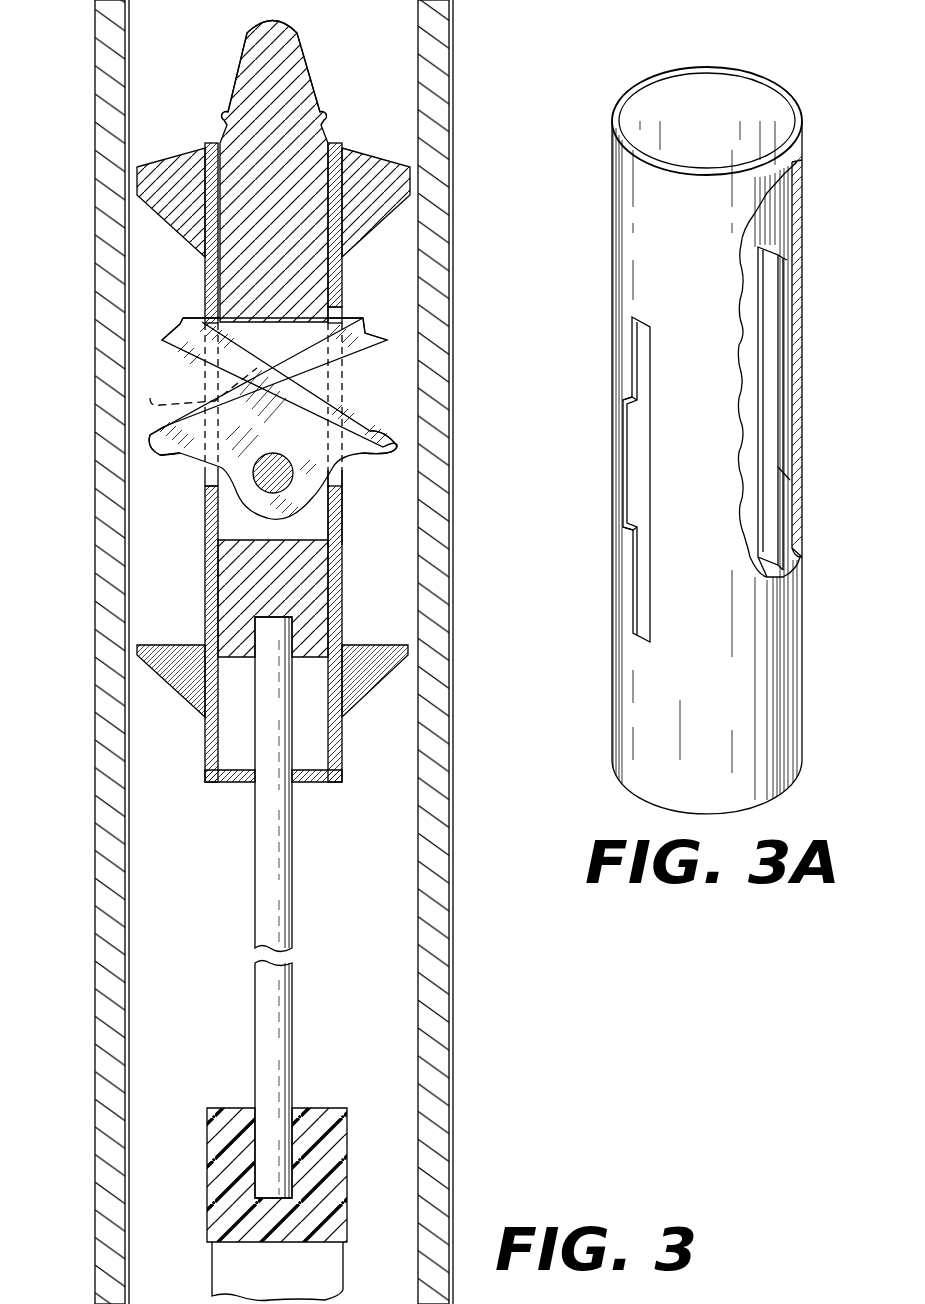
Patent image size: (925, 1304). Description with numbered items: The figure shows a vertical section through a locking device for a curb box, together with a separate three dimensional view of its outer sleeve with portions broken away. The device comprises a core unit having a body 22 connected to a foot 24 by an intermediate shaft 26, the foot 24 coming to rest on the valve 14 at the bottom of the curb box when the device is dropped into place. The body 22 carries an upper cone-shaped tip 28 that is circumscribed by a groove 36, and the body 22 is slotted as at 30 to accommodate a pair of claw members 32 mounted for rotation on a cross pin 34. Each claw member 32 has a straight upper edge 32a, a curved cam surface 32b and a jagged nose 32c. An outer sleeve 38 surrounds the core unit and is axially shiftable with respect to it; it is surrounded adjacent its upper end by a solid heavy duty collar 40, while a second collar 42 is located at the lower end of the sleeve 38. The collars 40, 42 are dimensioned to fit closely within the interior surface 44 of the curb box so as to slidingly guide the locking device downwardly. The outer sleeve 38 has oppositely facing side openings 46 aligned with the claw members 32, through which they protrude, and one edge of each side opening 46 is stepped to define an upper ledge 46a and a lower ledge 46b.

In FIG. 3, the valve 14 is at (332, 1275).
In FIG. 3, the body 22 is at (240, 262).
In FIG. 3, the foot 24 is at (340, 1131).
In FIG. 3, the intermediate shaft 26 is at (288, 862).
In FIG. 3, the cone-shaped tip 28 is at (305, 37).
In FIG. 3, the slot 30 is at (218, 542).
In FIG. 3, the claw member 32 is at (256, 368).
In FIG. 3, the straight upper edge 32a is at (240, 325).
In FIG. 3, the curved cam surface 32b is at (195, 466).
In FIG. 3, the jagged nose 32c is at (183, 320).
In FIG. 3, the cross pin 34 is at (287, 487).
In FIG. 3, the groove 36 is at (322, 118).
In FIG. 3, the outer sleeve 38 is at (343, 253).
In FIG. 3A, the outer sleeve 38 is at (788, 686).
In FIG. 3, the collar 40 is at (375, 153).
In FIG. 3, the second collar 42 is at (357, 700).
In FIG. 3, the interior surface 44 is at (430, 44).
In FIG. 3, the side opening 46 is at (340, 538).
In FIG. 3A, the side opening 46 is at (637, 467).
In FIG. 3, the upper ledge 46a is at (195, 386).
In FIG. 3A, the upper ledge 46a is at (630, 400).
In FIG. 3, the lower ledge 46b is at (208, 490).
In FIG. 3A, the lower ledge 46b is at (627, 530).